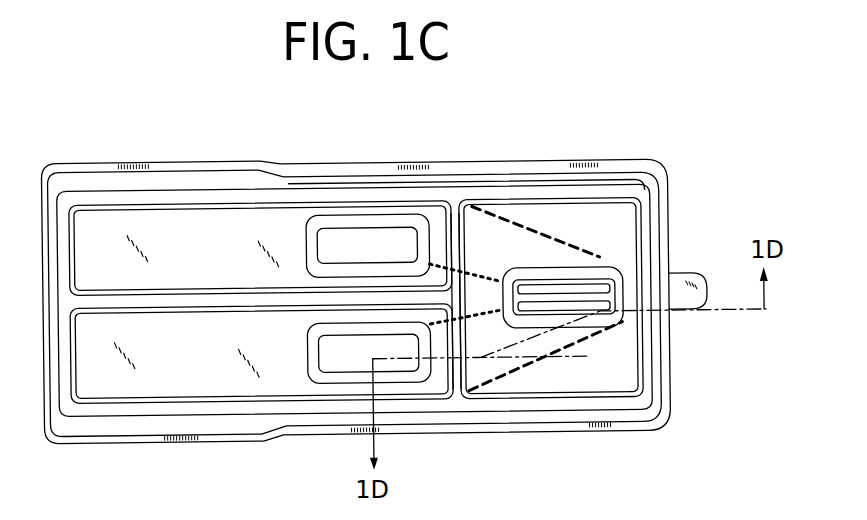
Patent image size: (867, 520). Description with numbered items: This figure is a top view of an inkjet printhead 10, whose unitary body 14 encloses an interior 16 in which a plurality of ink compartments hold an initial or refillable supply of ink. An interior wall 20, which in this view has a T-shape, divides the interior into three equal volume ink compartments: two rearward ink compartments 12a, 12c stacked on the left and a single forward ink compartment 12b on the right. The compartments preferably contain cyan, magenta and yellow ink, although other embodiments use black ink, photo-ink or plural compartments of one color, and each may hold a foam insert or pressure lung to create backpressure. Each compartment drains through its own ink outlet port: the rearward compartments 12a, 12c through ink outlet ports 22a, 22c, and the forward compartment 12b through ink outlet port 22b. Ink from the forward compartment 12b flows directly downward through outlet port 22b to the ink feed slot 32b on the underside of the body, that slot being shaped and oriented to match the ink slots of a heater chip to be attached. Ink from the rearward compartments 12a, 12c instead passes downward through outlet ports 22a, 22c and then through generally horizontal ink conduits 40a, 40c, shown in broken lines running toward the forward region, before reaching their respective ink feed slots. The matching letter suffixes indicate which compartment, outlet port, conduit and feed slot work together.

The inkjet printhead 10 is at (151, 116).
The unitary body 14 is at (305, 161).
The interior 16 is at (233, 386).
The rearward ink compartment 12a is at (212, 263).
The forward ink compartment 12b is at (622, 235).
The rearward ink compartment 12c is at (212, 368).
The interior wall 20 is at (461, 238).
The ink outlet port 22a is at (401, 252).
The ink outlet port 22b is at (613, 295).
The ink outlet port 22c is at (410, 354).
The ink feed slot 32b is at (582, 290).
The ink conduit 40a is at (529, 248).
The ink conduit 40c is at (557, 342).